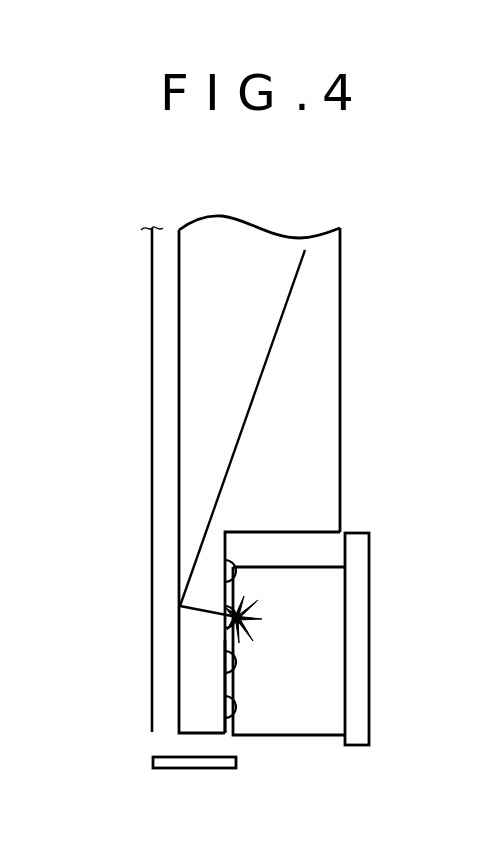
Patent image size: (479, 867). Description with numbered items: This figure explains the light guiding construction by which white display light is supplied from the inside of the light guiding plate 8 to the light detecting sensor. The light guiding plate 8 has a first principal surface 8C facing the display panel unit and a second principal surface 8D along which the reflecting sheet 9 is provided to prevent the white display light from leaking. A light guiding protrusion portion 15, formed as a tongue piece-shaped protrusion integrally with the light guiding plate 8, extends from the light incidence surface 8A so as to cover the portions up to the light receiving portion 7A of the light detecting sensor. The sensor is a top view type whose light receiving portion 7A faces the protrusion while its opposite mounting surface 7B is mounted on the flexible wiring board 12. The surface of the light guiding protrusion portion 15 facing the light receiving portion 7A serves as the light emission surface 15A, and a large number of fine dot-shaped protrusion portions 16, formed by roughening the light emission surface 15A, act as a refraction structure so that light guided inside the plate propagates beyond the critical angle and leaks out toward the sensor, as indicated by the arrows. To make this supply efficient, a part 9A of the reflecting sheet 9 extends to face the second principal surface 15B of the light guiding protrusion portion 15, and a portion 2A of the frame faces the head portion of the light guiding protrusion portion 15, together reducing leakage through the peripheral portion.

The reflecting sheet 9 is at (152, 302).
The light guiding plate 8 is at (328, 268).
The second principal surface 8D is at (178, 365).
The first principal surface 8C is at (340, 340).
The second principal surface 15B is at (179, 665).
The light incidence surface 8A is at (310, 532).
The mounting surface 7B is at (345, 610).
The light receiving portion 7A is at (235, 735).
The flexible wiring board 12 is at (358, 667).
The light guiding protrusion portion 15 is at (200, 562).
The part of the reflecting sheet 9A is at (152, 612).
The dot-shaped protrusion portions 16 is at (230, 707).
The light emission surface 15A is at (228, 727).
The portion of the frame 2A is at (169, 770).